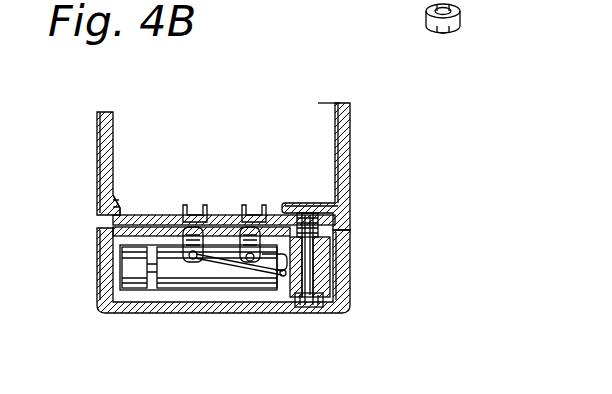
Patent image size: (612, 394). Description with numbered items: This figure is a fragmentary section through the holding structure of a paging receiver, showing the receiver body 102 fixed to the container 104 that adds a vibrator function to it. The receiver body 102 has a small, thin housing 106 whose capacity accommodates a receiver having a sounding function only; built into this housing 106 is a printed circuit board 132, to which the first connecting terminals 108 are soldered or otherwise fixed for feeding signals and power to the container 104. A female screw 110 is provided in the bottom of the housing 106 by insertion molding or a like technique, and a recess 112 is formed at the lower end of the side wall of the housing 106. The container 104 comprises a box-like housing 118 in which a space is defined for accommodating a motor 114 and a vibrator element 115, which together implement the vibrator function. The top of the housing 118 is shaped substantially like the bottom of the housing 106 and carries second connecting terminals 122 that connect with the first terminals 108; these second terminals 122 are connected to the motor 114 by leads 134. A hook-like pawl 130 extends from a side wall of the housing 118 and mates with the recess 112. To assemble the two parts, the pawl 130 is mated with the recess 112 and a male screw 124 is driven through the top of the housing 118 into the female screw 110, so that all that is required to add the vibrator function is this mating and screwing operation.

The receiver body 102 is at (352, 158).
The container 104 is at (350, 258).
The housing 106 is at (350, 110).
The first connecting terminals 108 is at (262, 210).
The female screw 110 is at (322, 229).
The recess 112 is at (112, 200).
The motor 114 is at (173, 290).
The vibrator element 115 is at (140, 257).
The box-like housing 118 is at (351, 300).
The second connecting terminals 122 is at (210, 262).
The male screw 124 is at (308, 308).
The hook-like pawl 130 is at (108, 213).
The printed circuit board 132 is at (318, 103).
The leads 134 is at (277, 275).